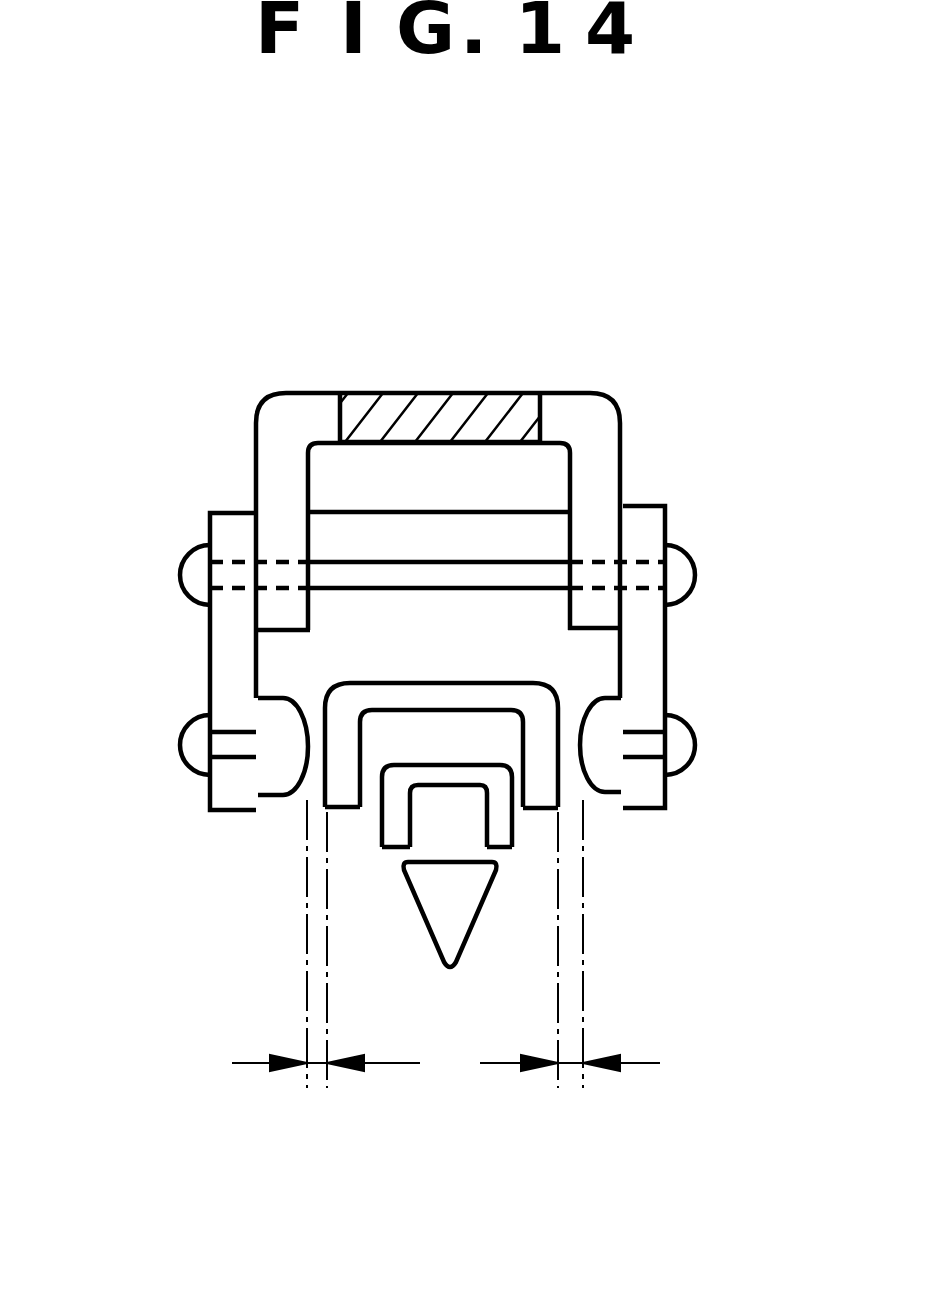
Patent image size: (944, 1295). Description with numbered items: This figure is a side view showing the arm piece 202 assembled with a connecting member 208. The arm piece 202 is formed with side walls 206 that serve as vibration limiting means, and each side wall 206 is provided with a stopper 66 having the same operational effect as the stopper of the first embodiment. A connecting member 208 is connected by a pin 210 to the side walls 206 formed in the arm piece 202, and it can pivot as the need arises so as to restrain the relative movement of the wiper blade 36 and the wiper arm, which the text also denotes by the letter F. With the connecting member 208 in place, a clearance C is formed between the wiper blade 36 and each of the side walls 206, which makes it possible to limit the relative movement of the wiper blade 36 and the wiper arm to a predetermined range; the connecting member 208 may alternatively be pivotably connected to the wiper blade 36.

The frame F is at (597, 473).
The arm piece 202 is at (425, 393).
The side walls 206 is at (296, 394).
The connecting member 208 is at (228, 645).
The pin 210 is at (682, 566).
The stopper 66 is at (598, 795).
The wiper blade 36 is at (375, 868).
The clearance C is at (567, 1100).